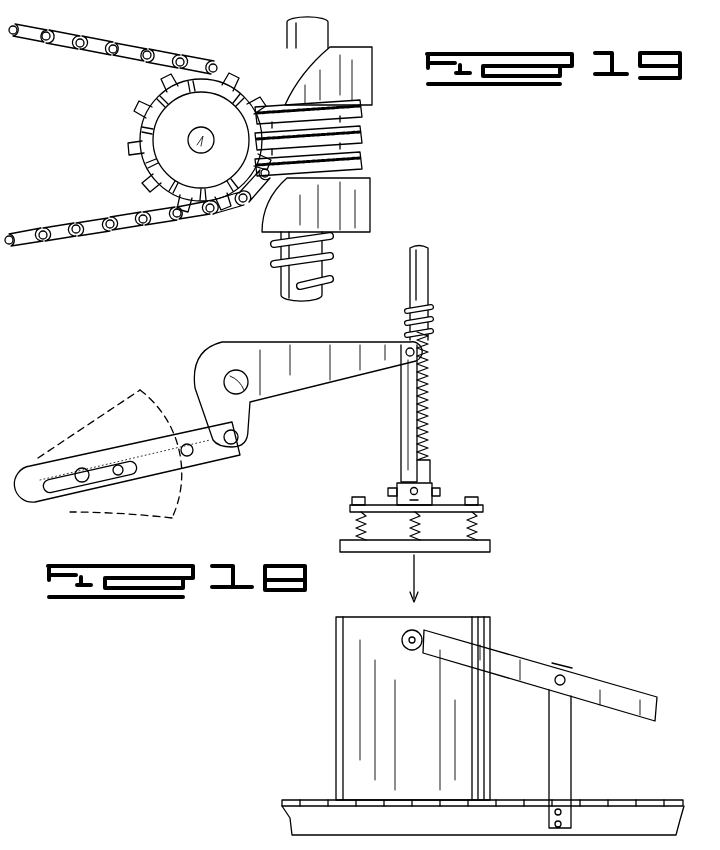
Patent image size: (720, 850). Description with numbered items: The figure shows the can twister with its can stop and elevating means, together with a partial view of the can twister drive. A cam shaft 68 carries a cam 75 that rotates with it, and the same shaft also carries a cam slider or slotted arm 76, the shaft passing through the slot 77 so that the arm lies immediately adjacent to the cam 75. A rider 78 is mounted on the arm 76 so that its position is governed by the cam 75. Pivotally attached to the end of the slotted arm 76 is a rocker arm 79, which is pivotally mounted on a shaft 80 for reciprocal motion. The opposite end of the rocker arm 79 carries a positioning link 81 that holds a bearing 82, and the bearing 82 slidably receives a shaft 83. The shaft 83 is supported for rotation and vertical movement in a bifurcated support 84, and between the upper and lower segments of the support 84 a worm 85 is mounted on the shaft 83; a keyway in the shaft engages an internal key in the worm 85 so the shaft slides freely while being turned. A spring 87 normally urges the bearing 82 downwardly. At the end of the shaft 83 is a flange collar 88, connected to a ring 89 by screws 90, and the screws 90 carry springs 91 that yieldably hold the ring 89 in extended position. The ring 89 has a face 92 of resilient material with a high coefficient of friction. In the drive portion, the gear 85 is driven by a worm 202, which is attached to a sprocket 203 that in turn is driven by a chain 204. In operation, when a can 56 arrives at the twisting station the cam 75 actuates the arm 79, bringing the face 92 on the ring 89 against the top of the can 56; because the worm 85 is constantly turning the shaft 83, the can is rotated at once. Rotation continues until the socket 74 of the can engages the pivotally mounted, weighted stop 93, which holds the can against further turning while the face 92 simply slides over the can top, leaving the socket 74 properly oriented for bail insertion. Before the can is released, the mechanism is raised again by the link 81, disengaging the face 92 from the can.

In FIG. 19, the chain 204 is at (70, 36).
In FIG. 19, the sprocket 203 is at (149, 98).
In FIG. 19, the worm 202 is at (162, 154).
In FIG. 19, the bifurcated support 84 is at (345, 57).
In FIG. 19, the worm 85 is at (362, 142).
In FIG. 19, the spring 87 is at (328, 262).
In FIG. 18, the spring 87 is at (427, 345).
In FIG. 19, the shaft 83 is at (283, 287).
In FIG. 18, the shaft 83 is at (428, 290).
In FIG. 18, the rocker arm 79 is at (243, 348).
In FIG. 18, the shaft 80 is at (248, 393).
In FIG. 18, the positioning link 81 is at (404, 418).
In FIG. 18, the bearing 82 is at (430, 458).
In FIG. 18, the cam 75 is at (130, 402).
In FIG. 18, the cam shaft 68 is at (82, 468).
In FIG. 18, the slot 77 is at (118, 482).
In FIG. 18, the rider 78 is at (192, 456).
In FIG. 18, the slotted arm 76 is at (38, 500).
In FIG. 18, the flange collar 88 is at (397, 500).
In FIG. 18, the screws 90 is at (352, 499).
In FIG. 18, the springs 91 is at (356, 525).
In FIG. 18, the ring 89 is at (400, 545).
In FIG. 18, the face 92 is at (440, 552).
In FIG. 18, the can 56 is at (414, 746).
In FIG. 18, the socket 74 is at (402, 640).
In FIG. 18, the stop 93 is at (508, 660).